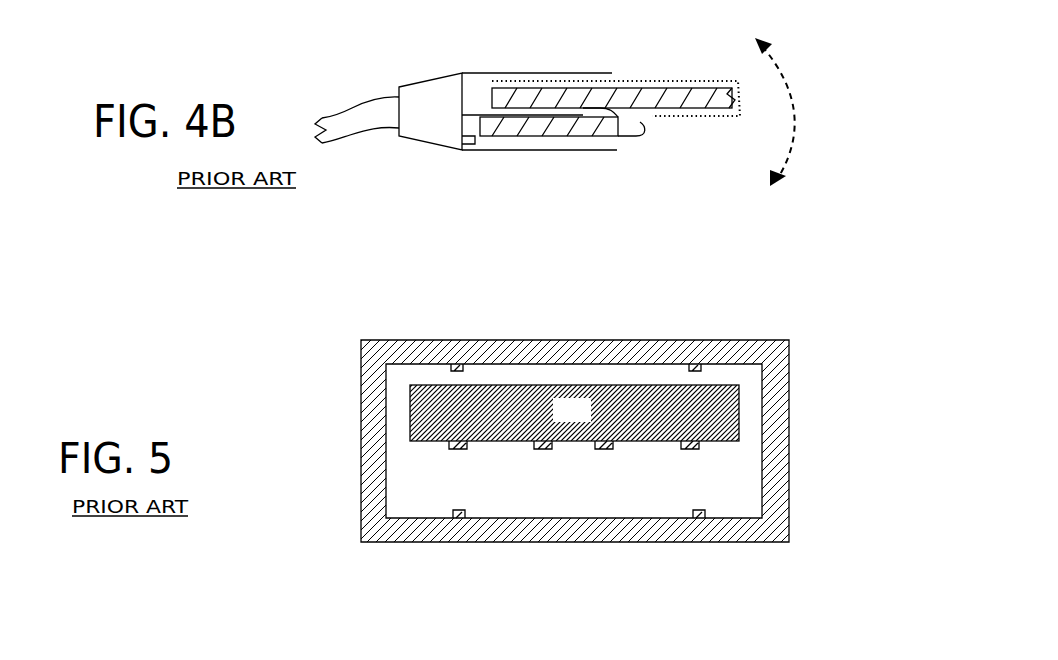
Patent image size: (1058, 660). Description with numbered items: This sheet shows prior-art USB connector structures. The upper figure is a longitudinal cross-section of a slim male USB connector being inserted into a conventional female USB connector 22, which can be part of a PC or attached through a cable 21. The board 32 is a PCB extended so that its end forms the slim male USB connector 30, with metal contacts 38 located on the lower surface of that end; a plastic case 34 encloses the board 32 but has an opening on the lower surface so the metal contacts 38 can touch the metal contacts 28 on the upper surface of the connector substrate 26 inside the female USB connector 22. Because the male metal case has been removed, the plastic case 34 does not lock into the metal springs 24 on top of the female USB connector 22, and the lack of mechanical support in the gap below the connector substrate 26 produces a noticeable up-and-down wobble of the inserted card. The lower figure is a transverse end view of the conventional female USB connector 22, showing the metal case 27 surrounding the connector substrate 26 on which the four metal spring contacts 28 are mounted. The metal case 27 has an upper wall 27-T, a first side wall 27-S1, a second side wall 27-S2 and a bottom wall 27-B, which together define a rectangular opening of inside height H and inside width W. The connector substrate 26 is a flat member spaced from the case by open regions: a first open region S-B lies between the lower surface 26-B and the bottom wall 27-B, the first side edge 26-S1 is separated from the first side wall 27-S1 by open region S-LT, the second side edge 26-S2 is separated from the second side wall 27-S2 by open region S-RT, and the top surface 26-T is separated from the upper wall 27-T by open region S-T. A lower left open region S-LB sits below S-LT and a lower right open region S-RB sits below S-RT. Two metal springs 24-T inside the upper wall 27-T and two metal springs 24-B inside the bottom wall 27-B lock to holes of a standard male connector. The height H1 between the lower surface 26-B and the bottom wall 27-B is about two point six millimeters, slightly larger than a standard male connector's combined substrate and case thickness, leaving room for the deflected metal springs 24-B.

In FIG. 4B, the cable 21 is at (370, 102).
In FIG. 4B, the female USB connector 22 is at (478, 73).
In FIG. 5, the female USB connector 22 is at (318, 320).
In FIG. 4B, the metal springs 24 is at (560, 82).
In FIG. 5, the metal springs 24-T is at (462, 369).
In FIG. 5, the metal springs 24-B is at (461, 510).
In FIG. 4B, the connector substrate 26 is at (475, 146).
In FIG. 5, the connector substrate 26 is at (574, 413).
In FIG. 5, the top surface 26-T is at (675, 386).
In FIG. 5, the lower surface 26-B is at (668, 442).
In FIG. 5, the first side edge 26-S1 is at (409, 396).
In FIG. 5, the second side edge 26-S2 is at (742, 408).
In FIG. 5, the metal case 27 is at (792, 528).
In FIG. 5, the upper wall 27-T is at (622, 344).
In FIG. 5, the bottom wall 27-B is at (405, 527).
In FIG. 5, the first side wall 27-S1 is at (371, 400).
In FIG. 5, the second side wall 27-S2 is at (783, 440).
In FIG. 4B, the metal contacts 28 is at (583, 136).
In FIG. 5, the metal contacts 28 is at (598, 448).
In FIG. 4B, the metal contacts 38 is at (583, 136).
In FIG. 4B, the male USB connector 30 is at (598, 73).
In FIG. 4B, the board 32 is at (700, 113).
In FIG. 4B, the plastic case 34 is at (636, 80).
In FIG. 5, the open region S-T is at (582, 368).
In FIG. 5, the open region S-B is at (626, 480).
In FIG. 5, the open region S-LT is at (397, 395).
In FIG. 5, the lower left open region S-LB is at (397, 497).
In FIG. 5, the open region S-RT is at (756, 388).
In FIG. 5, the lower right open region S-RB is at (748, 499).
In FIG. 5, the inside width W is at (762, 340).
In FIG. 5, the inside height H is at (386, 518).
In FIG. 5, the height H1 is at (410, 441).